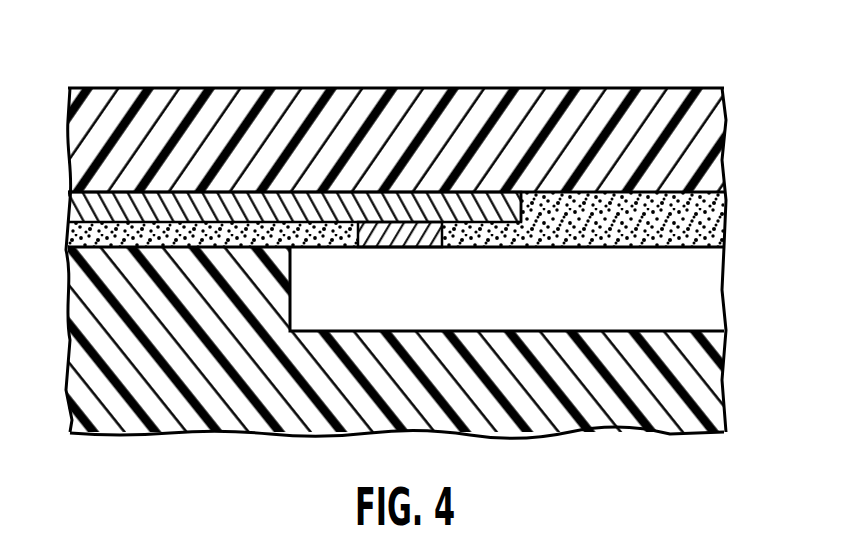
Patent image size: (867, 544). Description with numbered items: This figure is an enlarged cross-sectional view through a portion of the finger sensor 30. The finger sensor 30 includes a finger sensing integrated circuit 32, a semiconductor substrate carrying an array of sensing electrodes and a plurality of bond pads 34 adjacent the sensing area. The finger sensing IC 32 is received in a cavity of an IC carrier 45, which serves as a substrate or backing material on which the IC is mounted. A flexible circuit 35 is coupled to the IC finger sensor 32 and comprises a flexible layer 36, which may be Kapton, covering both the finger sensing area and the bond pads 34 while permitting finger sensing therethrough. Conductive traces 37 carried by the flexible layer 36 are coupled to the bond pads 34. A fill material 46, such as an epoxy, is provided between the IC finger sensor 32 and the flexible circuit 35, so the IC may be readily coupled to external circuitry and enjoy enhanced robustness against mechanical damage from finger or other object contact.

The finger sensor 30 is at (398, 237).
The finger sensing integrated circuit 32 is at (700, 282).
The bond pads 34 is at (393, 247).
The flexible circuit 35 is at (289, 88).
The flexible layer 36 is at (373, 109).
The conductive traces 37 is at (68, 207).
The IC carrier 45 is at (420, 357).
The fill material 46 is at (700, 214).